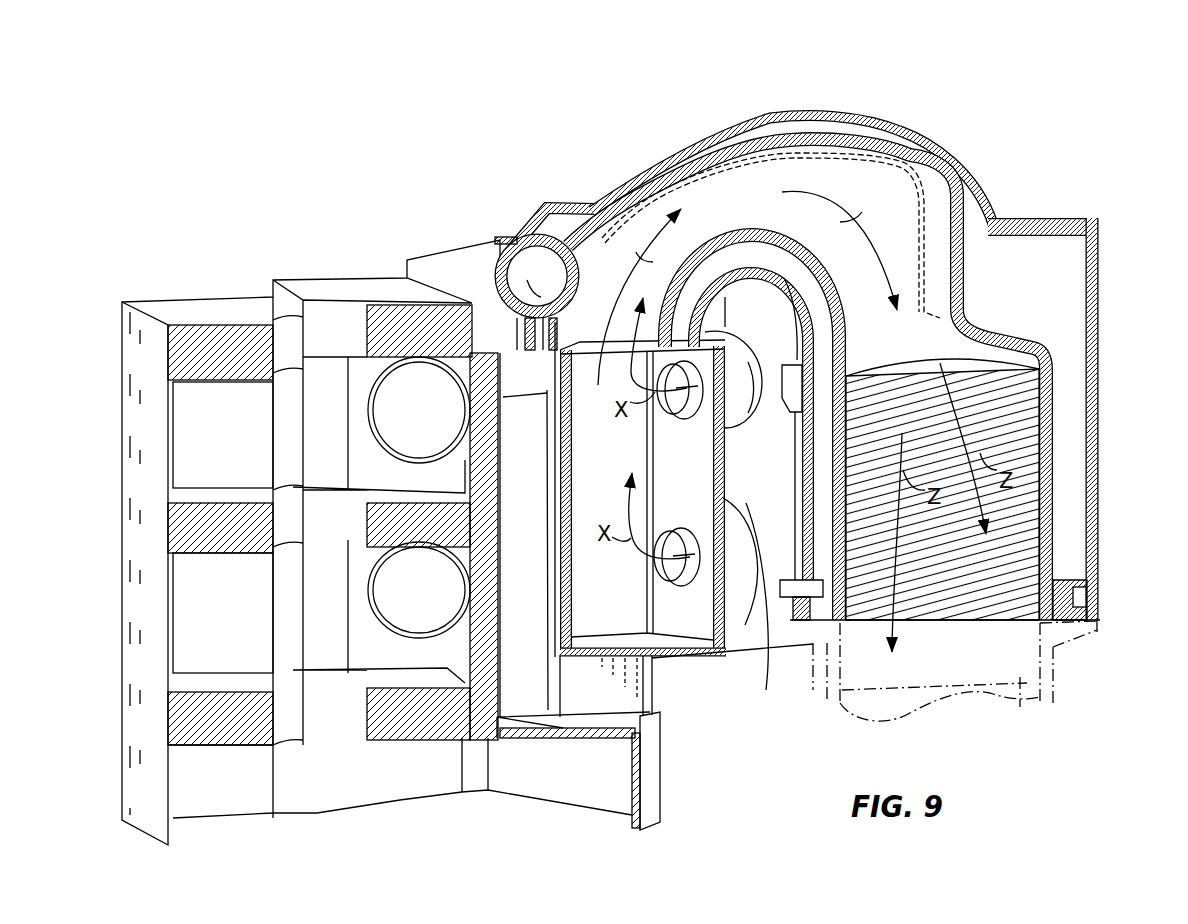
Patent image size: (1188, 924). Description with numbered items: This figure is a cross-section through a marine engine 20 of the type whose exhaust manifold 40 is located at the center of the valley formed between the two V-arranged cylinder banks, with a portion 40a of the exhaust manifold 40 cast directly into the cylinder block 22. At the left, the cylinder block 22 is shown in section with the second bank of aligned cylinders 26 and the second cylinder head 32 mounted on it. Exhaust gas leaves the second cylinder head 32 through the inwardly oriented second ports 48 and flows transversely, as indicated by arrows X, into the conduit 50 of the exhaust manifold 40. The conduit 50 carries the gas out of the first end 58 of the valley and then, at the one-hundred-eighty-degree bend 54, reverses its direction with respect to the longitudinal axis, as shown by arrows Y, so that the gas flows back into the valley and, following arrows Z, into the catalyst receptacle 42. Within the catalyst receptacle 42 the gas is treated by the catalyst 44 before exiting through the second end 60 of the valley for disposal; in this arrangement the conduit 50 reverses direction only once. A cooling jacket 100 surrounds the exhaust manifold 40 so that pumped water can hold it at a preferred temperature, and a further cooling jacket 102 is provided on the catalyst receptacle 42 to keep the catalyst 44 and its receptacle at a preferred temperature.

The marine engine 20 is at (941, 66).
The cylinder block 22 is at (121, 464).
The second bank of aligned cylinders 26 is at (441, 814).
The second cylinder head 32 is at (645, 683).
The exhaust manifold 40 is at (679, 134).
The portion of exhaust manifold 40a is at (766, 682).
The catalyst receptacle 42 is at (1098, 596).
The catalyst 44 is at (1020, 708).
The second ports 48 is at (678, 420).
The conduit 50 is at (859, 160).
The bend 54 is at (752, 178).
The first end of valley 58 is at (626, 110).
The second end of valley 60 is at (695, 829).
The cooling jacket 100 is at (927, 157).
The cooling jacket 102 is at (1067, 648).